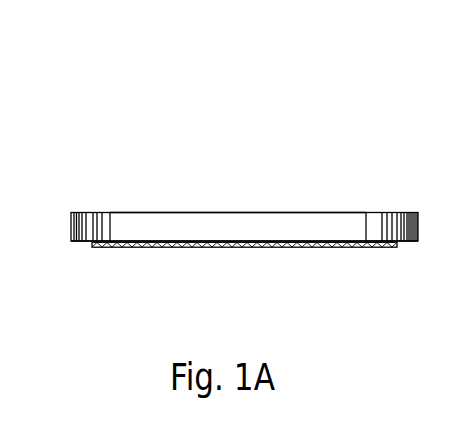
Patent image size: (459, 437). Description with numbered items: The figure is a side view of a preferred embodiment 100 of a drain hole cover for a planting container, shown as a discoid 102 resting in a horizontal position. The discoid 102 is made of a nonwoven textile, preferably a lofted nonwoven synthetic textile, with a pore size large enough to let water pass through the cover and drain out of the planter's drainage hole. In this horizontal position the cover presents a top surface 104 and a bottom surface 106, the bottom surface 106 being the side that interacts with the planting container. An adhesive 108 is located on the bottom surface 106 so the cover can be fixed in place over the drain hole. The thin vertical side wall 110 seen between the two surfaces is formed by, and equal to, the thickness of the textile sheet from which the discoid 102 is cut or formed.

The embodiment 100 is at (155, 78).
The discoid 102 is at (97, 180).
The top surface 104 is at (402, 212).
The bottom surface 106 is at (410, 242).
The adhesive 108 is at (228, 243).
The vertical side wall 110 is at (177, 229).